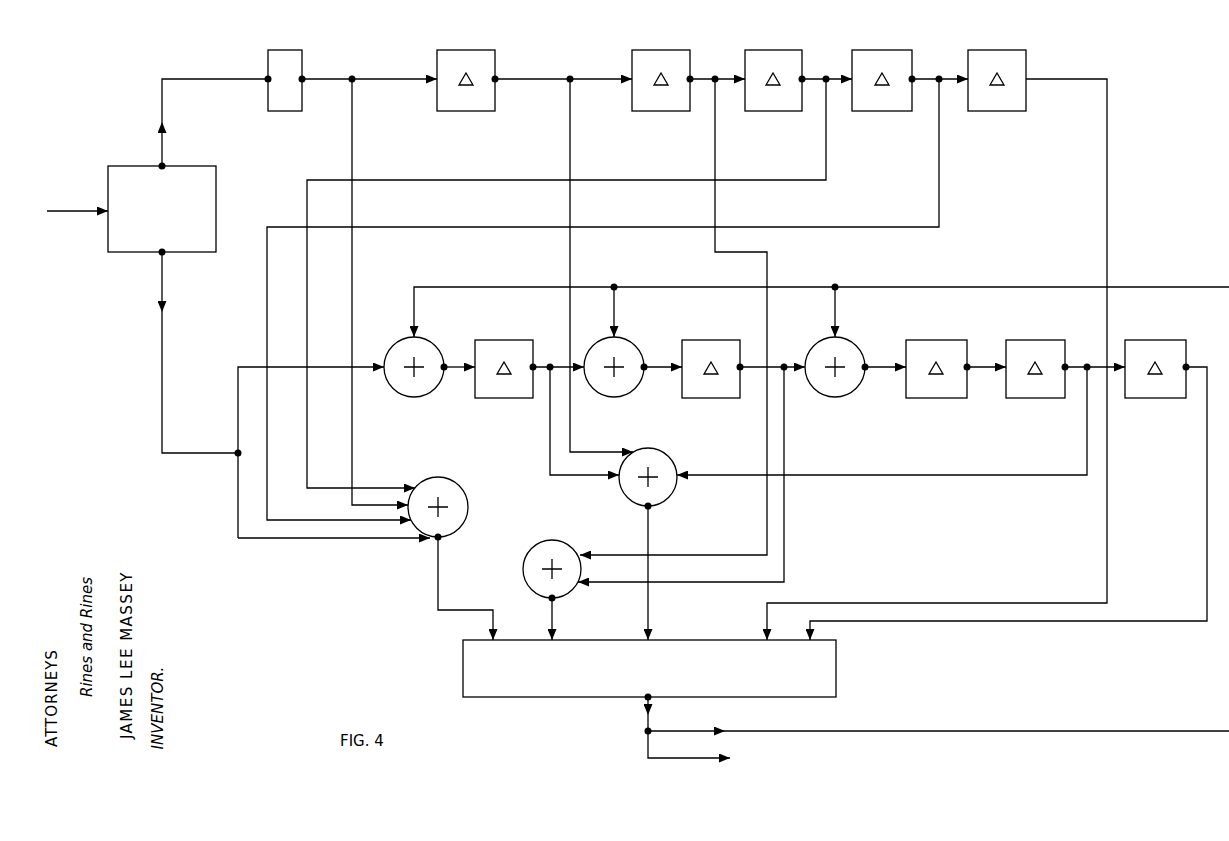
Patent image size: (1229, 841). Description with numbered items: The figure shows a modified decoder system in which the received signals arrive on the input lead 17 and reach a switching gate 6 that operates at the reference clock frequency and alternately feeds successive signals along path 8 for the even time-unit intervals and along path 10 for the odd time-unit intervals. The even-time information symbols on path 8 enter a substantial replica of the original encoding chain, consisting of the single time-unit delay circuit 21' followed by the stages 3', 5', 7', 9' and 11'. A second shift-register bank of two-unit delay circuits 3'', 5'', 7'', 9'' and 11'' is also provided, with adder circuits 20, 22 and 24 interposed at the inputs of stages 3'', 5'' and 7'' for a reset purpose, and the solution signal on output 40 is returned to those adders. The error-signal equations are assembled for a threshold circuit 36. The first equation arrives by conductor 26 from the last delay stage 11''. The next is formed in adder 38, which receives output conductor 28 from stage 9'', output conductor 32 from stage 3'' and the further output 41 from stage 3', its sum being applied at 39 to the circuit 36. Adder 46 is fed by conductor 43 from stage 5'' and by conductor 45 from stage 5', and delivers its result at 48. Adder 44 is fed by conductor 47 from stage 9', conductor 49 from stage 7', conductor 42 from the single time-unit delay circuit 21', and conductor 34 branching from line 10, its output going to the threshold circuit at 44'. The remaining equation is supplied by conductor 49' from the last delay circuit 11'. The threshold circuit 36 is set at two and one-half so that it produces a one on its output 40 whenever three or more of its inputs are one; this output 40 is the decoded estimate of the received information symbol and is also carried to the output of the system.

The switching gate 6 is at (216, 197).
The path 8 is at (225, 78).
The input lead 17 is at (85, 213).
The path 10 is at (163, 365).
The single time-unit delay circuit 21' is at (308, 77).
The stage 3' is at (486, 75).
The stage 5' is at (663, 62).
The stage 7' is at (775, 62).
The stage 9' is at (884, 63).
The last delay circuit 11' is at (997, 63).
The 2-unit delay circuit 3'' is at (506, 352).
The 2-unit delay circuit 5'' is at (713, 352).
The 2-unit delay circuit 7'' is at (938, 352).
The 2-unit delay circuit 9'' is at (1037, 352).
The 2-unit delay circuit 11'' is at (1157, 352).
The adder circuit 20 is at (432, 340).
The adder circuit 22 is at (632, 340).
The adder circuit 24 is at (855, 343).
The adder 38 is at (663, 443).
The adder 44 is at (461, 509).
The adder 46 is at (564, 542).
The threshold circuit 36 is at (836, 652).
The output 40 is at (1005, 285).
The output 41 is at (571, 243).
The conductor 42 is at (353, 242).
The conductor 43 is at (785, 428).
The conductor 45 is at (716, 233).
The conductor 47 is at (650, 226).
The conductor 49 is at (566, 283).
The conductor 49' is at (937, 359).
The output conductor 26 is at (1030, 623).
The output conductor 28 is at (970, 473).
The output conductor 32 is at (550, 437).
The conductor 34 is at (238, 507).
The output 39 is at (649, 595).
The output 44' is at (465, 588).
The output 48 is at (554, 611).